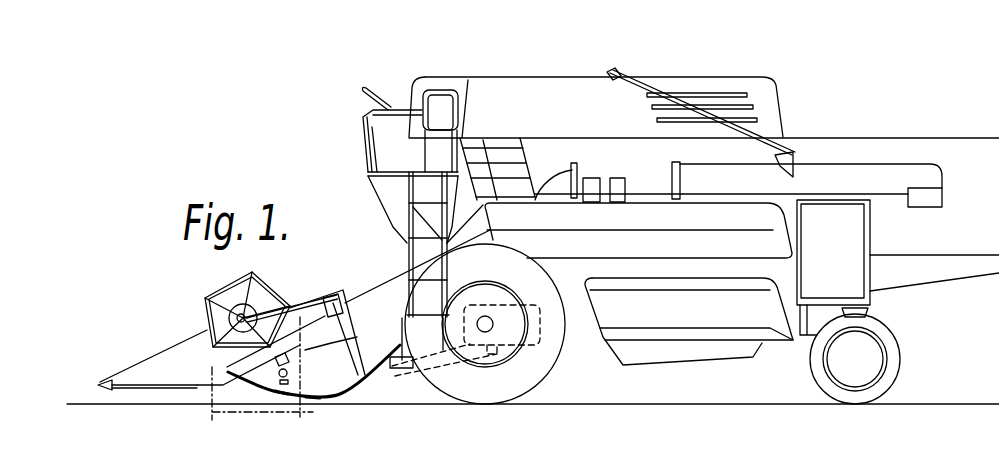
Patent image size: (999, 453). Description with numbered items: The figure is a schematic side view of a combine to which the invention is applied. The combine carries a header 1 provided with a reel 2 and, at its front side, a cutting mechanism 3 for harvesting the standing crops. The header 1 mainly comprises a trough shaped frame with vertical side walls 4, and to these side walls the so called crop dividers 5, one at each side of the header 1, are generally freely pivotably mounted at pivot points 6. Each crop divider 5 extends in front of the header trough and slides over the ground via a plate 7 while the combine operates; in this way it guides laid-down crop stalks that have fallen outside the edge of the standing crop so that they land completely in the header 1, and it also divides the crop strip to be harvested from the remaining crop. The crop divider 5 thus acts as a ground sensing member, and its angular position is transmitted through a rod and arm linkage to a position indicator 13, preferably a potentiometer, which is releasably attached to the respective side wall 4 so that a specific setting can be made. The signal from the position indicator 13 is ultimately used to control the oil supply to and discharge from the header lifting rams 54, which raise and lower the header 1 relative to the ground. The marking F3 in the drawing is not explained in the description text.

The header 1 is at (353, 390).
The reel 2 is at (228, 279).
The cutting mechanism 3 is at (281, 394).
The vertical side walls 4 is at (313, 398).
The crop divider 5 is at (152, 393).
The pivot point 6 is at (350, 343).
The plate 7 is at (100, 387).
The position indicator 13 is at (297, 358).
The header lifting rams 54 is at (403, 368).
The force / reference distance F3 is at (212, 420).